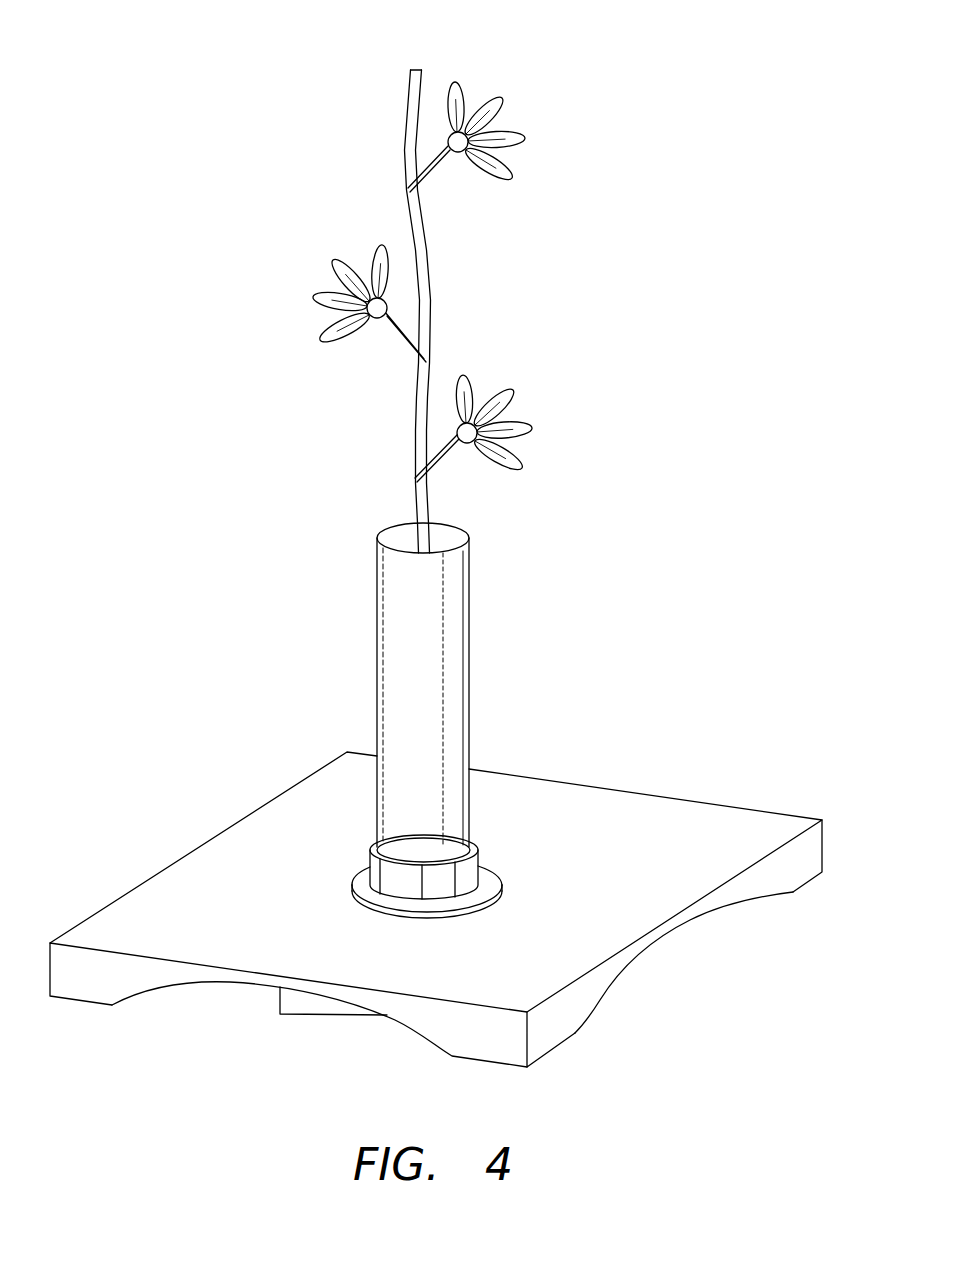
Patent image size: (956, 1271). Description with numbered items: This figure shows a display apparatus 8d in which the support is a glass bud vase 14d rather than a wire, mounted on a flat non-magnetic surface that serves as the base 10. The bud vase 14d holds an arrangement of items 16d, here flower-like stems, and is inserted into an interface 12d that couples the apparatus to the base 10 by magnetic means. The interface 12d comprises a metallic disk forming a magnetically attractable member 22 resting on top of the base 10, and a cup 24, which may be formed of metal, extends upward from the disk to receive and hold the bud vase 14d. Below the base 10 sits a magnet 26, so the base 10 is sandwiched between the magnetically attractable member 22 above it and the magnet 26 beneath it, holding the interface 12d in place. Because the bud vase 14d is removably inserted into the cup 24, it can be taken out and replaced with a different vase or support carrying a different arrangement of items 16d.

The display assembly 8d is at (256, 617).
The base 10 is at (258, 808).
The interface 12d is at (455, 898).
The bud vase 14d is at (470, 628).
The items 16d is at (430, 283).
The magnetically attractable member 22 is at (350, 897).
The cup 24 is at (478, 862).
The magnet 26 is at (280, 1014).